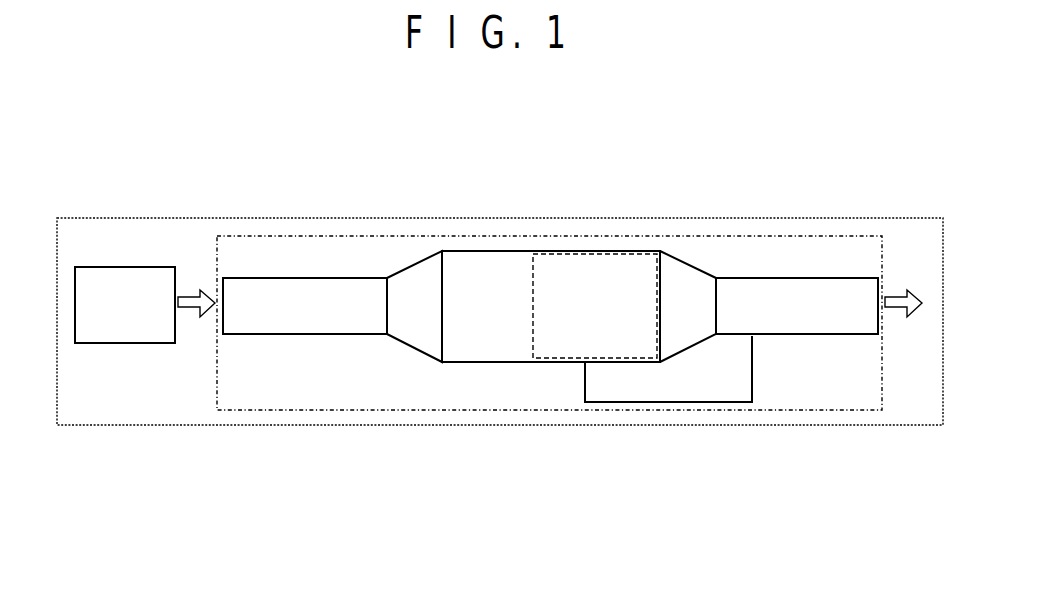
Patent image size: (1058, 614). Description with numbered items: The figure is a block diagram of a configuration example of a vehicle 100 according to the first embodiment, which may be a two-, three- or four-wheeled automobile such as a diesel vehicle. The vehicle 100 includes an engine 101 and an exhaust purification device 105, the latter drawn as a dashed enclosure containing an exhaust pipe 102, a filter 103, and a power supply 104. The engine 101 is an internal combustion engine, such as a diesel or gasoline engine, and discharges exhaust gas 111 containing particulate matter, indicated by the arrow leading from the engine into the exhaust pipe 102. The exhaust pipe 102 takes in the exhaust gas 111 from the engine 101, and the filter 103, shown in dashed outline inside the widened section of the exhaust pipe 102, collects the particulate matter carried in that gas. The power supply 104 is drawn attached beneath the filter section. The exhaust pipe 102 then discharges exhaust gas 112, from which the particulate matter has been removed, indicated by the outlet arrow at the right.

The vehicle 100 is at (398, 220).
The engine 101 is at (125, 345).
The exhaust pipe 102 is at (472, 250).
The filter 103 is at (533, 288).
The power supply 104 is at (621, 403).
The exhaust purification device 105 is at (755, 237).
The exhaust gas 111 is at (193, 290).
The exhaust gas 112 is at (896, 290).